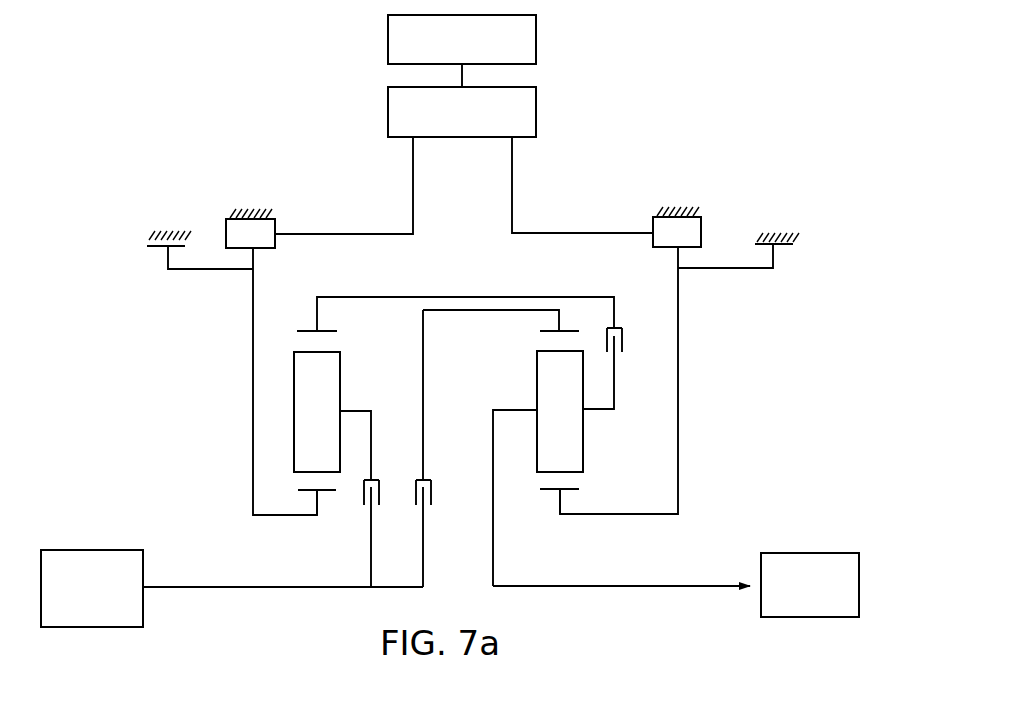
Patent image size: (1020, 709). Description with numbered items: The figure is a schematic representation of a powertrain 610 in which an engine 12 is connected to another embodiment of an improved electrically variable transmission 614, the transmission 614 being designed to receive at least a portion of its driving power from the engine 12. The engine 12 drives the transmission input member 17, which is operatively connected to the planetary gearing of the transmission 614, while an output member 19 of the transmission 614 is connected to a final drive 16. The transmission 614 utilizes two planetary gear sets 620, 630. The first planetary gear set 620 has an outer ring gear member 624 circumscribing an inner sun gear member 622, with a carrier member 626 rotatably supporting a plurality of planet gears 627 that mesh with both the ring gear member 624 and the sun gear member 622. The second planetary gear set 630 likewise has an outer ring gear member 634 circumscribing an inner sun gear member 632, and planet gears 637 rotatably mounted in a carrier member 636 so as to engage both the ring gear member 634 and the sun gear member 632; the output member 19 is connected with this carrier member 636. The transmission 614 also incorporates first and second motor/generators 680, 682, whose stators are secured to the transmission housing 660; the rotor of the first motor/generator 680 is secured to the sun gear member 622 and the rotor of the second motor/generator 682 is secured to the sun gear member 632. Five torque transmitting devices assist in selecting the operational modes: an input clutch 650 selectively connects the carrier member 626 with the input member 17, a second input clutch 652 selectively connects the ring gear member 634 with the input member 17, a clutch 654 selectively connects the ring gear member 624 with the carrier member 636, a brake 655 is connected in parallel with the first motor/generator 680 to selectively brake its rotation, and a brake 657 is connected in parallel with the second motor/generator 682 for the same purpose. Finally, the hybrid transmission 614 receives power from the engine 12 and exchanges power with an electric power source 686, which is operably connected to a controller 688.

The engine 12 is at (108, 530).
The final drive 16 is at (795, 538).
The transmission input member 17 is at (178, 590).
The output member 19 is at (720, 589).
The powertrain 610 is at (701, 102).
The electrically variable transmission 614 is at (745, 131).
The first planetary gear set 620 is at (307, 494).
The inner sun gear member 622 is at (324, 494).
The outer ring gear member 624 is at (331, 329).
The carrier member 626 is at (351, 406).
The planet gears 627 is at (317, 412).
The second planetary gear set 630 is at (551, 494).
The inner sun gear member 632 is at (567, 494).
The outer ring gear member 634 is at (551, 329).
The carrier member 636 is at (531, 406).
The planet gears 637 is at (560, 411).
The input clutch 650 is at (379, 478).
The input clutch 652 is at (431, 478).
The clutch 654 is at (623, 326).
The brake 655 is at (145, 237).
The brake 657 is at (800, 239).
The transmission housing 660 is at (161, 231).
The first motor/generator 680 is at (223, 215).
The second motor/generator 682 is at (705, 215).
The electric power source 686 is at (388, 42).
The controller 688 is at (388, 111).